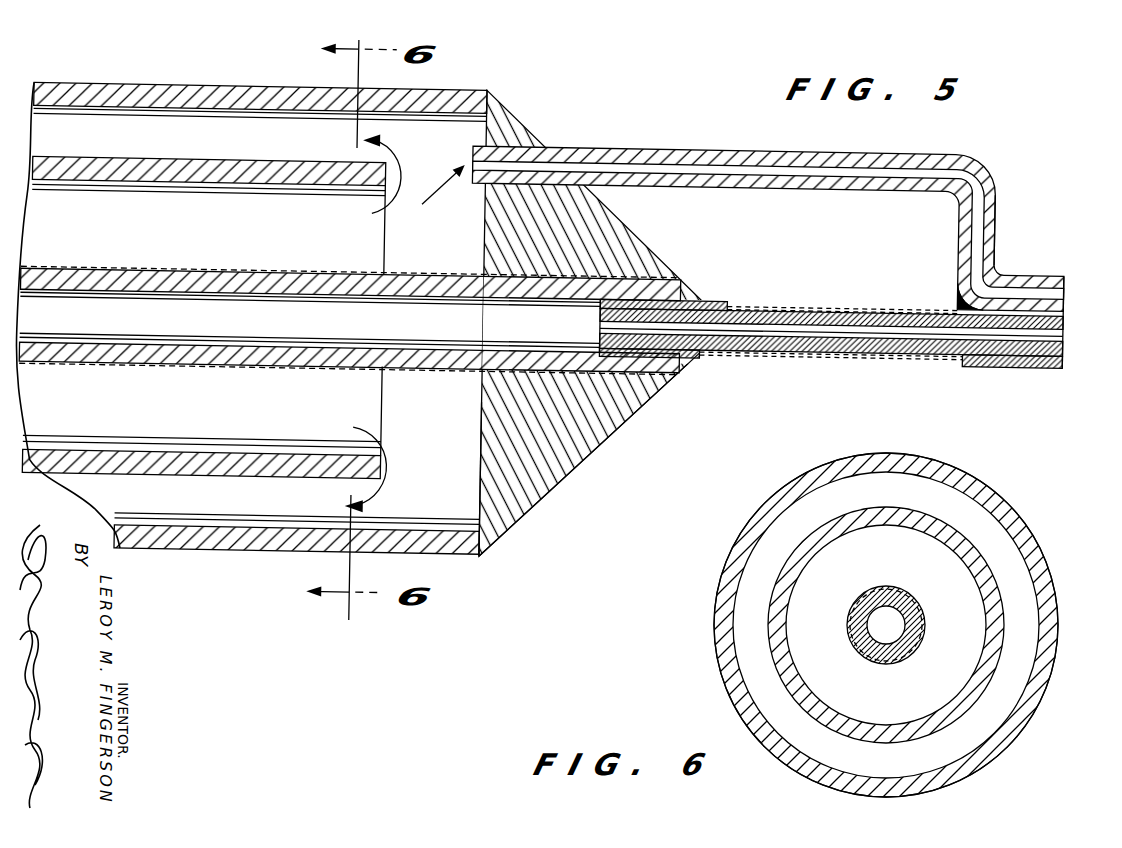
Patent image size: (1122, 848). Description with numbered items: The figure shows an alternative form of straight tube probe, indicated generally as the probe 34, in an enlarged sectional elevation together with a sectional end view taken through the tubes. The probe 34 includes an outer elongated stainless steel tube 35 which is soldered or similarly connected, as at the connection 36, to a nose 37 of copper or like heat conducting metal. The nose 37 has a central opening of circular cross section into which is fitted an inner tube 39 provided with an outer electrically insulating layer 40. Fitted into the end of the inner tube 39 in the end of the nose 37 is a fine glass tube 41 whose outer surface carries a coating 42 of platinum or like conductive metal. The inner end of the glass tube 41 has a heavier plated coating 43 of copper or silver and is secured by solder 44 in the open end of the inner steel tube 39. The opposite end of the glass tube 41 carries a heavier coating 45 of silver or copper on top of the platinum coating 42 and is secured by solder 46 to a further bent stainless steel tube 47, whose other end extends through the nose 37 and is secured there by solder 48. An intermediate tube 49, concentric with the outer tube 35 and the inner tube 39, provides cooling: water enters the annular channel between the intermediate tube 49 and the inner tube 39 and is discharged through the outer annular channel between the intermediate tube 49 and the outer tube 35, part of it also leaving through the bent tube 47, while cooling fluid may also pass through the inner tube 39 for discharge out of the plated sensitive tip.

In FIG. 5, the probe 34 is at (532, 123).
In FIG. 6, the probe 34 is at (1012, 495).
In FIG. 5, the outer elongated stainless steel tube 35 is at (226, 88).
In FIG. 6, the outer elongated stainless steel tube 35 is at (1058, 600).
In FIG. 5, the solder connection 36 is at (482, 558).
In FIG. 5, the nose 37 is at (551, 497).
In FIG. 5, the inner tube 39 is at (400, 346).
In FIG. 6, the inner tube 39 is at (906, 629).
In FIG. 5, the outer electrically insulating layer 40 is at (455, 272).
In FIG. 6, the outer electrically insulating layer 40 is at (922, 606).
In FIG. 5, the fine glass tube 41 is at (1063, 312).
In FIG. 5, the coating 42 is at (878, 345).
In FIG. 5, the heavier plated coating 43 is at (718, 354).
In FIG. 5, the solder 44 is at (696, 356).
In FIG. 5, the heavier coating 45 is at (996, 352).
In FIG. 5, the solder 46 is at (966, 295).
In FIG. 5, the bent stainless steel tube 47 is at (992, 194).
In FIG. 5, the solder 48 is at (542, 144).
In FIG. 5, the intermediate tube 49 is at (176, 163).
In FIG. 6, the intermediate tube 49 is at (894, 509).